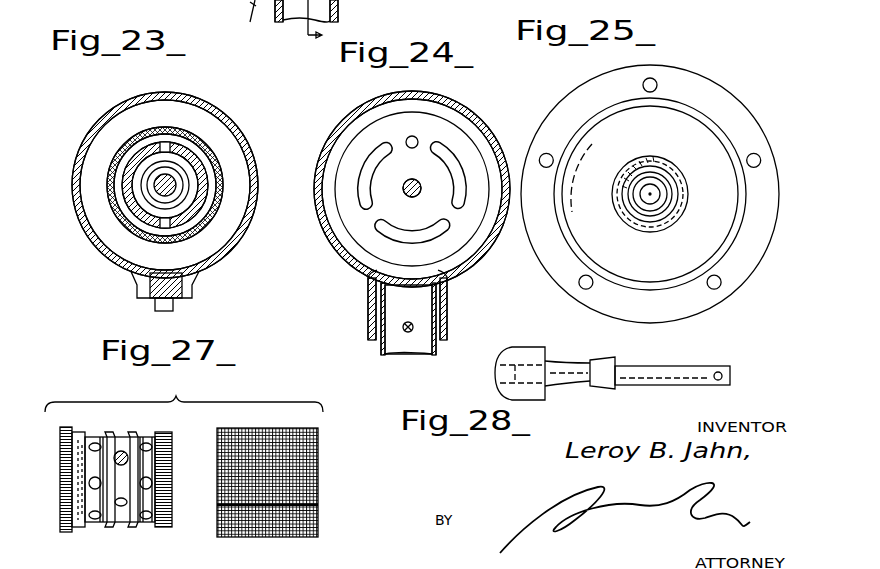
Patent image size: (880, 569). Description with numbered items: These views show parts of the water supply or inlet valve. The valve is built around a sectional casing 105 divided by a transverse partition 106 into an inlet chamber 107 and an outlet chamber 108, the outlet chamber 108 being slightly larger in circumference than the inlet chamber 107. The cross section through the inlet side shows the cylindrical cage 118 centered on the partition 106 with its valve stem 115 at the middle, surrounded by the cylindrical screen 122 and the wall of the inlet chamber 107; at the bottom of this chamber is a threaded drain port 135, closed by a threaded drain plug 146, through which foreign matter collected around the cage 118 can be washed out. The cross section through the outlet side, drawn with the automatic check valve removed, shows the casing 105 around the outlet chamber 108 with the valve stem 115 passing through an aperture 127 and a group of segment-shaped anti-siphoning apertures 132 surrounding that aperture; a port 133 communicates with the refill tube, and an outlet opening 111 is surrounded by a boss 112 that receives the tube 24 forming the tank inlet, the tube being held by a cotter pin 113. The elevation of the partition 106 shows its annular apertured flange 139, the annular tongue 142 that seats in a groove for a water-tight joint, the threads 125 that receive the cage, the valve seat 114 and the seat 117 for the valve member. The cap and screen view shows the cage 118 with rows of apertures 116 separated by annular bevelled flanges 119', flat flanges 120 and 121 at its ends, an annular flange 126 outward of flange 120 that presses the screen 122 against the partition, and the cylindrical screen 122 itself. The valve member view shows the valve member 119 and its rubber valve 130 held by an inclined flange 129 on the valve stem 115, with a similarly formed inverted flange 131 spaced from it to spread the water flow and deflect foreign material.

In FIG. 24, the tube 24 is at (396, 346).
In FIG. 24, the sectional casing 105 is at (465, 113).
In FIG. 23, the transverse partition 106 is at (206, 112).
In FIG. 25, the transverse partition 106 is at (746, 82).
In FIG. 23, the inlet chamber 107 is at (96, 232).
In FIG. 24, the outlet chamber 108 is at (345, 236).
In FIG. 24, the outlet opening 111 is at (372, 274).
In FIG. 24, the boss 112 is at (448, 312).
In FIG. 24, the cotter pin 113 is at (410, 333).
In FIG. 25, the valve seat 114 is at (664, 222).
In FIG. 23, the valve stem 115 is at (172, 182).
In FIG. 24, the valve stem 115 is at (410, 179).
In FIG. 28, the valve stem 115 is at (679, 372).
In FIG. 23, the apertures 116 is at (167, 146).
In FIG. 27, the apertures 116 is at (145, 529).
In FIG. 25, the seat 117 is at (630, 172).
In FIG. 23, the cage 118 is at (120, 183).
In FIG. 27, the cage 118 is at (58, 490).
In FIG. 28, the valve member 119 is at (599, 359).
In FIG. 27, the annular bevelled flanges 119' is at (113, 498).
In FIG. 27, the flat flange 120 is at (78, 531).
In FIG. 27, the flat flange 121 is at (165, 434).
In FIG. 23, the cylindrical screen 122 is at (222, 178).
In FIG. 27, the cylindrical screen 122 is at (328, 508).
In FIG. 25, the threads 125 is at (639, 223).
In FIG. 27, the annular flange 126 is at (66, 427).
In FIG. 24, the aperture 127 is at (406, 196).
In FIG. 28, the inclined flange 129 is at (549, 386).
In FIG. 28, the rubber valve 130 is at (531, 347).
In FIG. 28, the flange 131 is at (665, 397).
In FIG. 24, the anti-siphoning apertures 132 is at (455, 168).
In FIG. 24, the port 133 is at (405, 140).
In FIG. 23, the drain port 135 is at (150, 286).
In FIG. 24, the annular apertured flange 139 is at (257, 20).
In FIG. 25, the annular apertured flange 139 is at (573, 96).
In FIG. 24, the annular tongue 142 is at (230, 11).
In FIG. 25, the annular tongue 142 is at (718, 260).
In FIG. 23, the drain plug 146 is at (157, 305).